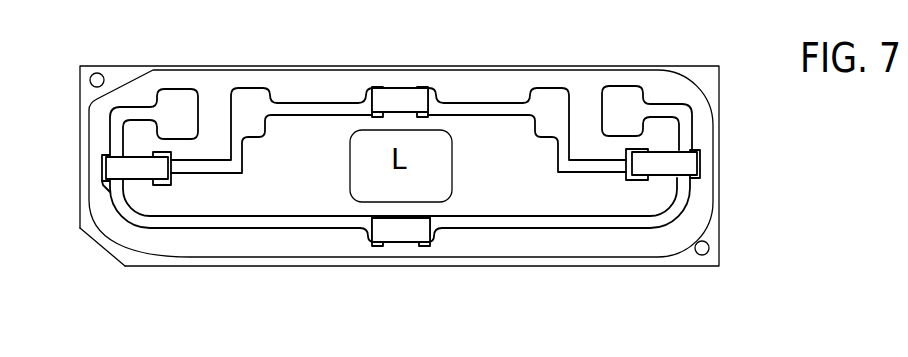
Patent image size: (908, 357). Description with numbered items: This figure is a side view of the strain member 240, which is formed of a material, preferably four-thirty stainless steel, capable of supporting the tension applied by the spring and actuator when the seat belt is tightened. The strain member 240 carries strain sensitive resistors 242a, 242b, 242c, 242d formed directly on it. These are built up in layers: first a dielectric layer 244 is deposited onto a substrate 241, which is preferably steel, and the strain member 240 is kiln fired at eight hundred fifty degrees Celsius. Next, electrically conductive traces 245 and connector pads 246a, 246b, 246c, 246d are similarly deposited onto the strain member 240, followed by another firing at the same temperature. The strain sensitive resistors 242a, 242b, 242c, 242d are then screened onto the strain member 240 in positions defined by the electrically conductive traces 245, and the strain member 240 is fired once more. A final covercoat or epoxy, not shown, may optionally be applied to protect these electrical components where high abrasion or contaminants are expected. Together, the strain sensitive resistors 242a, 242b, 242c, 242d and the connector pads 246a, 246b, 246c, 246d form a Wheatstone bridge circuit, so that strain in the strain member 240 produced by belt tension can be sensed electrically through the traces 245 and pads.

The strain member 240 is at (733, 141).
The substrate 241 is at (110, 257).
The strain sensitive resistor 242a is at (160, 174).
The strain sensitive resistor 242b is at (392, 97).
The strain sensitive resistor 242c is at (405, 233).
The strain sensitive resistor 242d is at (683, 163).
The dielectric layer 244 is at (269, 240).
The electrically conductive traces 245 is at (623, 218).
The connector pad 246a is at (188, 97).
The connector pad 246b is at (256, 100).
The connector pad 246c is at (552, 94).
The connector pad 246d is at (631, 103).